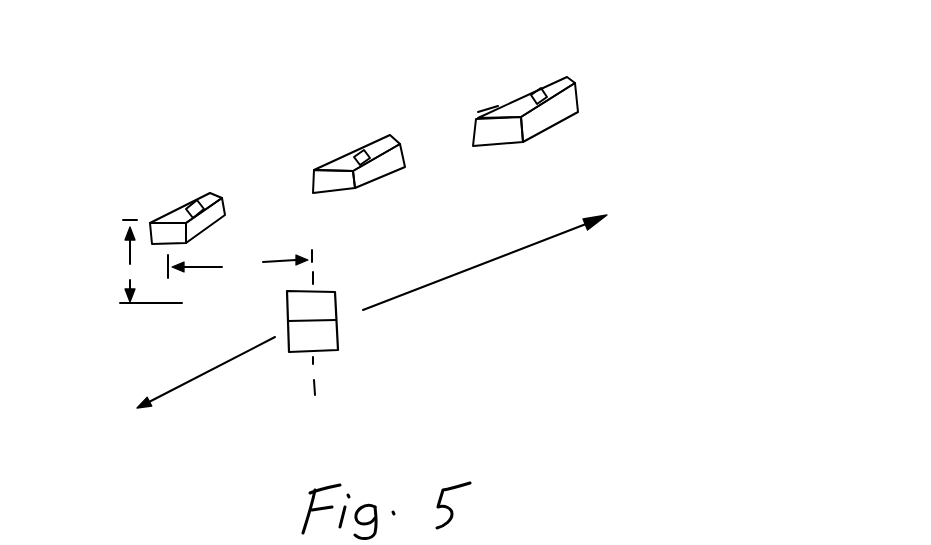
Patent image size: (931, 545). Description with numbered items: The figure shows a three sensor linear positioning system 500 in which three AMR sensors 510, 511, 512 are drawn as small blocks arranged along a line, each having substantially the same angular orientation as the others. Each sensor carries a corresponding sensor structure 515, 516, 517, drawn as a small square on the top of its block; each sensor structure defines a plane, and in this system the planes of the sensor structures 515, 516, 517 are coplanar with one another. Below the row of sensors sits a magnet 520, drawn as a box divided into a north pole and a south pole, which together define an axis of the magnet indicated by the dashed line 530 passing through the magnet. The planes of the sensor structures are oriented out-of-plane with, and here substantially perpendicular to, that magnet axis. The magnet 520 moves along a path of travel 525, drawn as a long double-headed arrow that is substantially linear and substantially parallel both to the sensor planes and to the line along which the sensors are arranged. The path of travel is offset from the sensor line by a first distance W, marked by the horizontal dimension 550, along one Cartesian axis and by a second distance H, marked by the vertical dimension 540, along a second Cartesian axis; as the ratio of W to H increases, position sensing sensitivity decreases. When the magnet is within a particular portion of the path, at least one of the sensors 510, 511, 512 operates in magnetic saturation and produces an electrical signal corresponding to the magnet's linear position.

The three sensor linear positioning system 500 is at (742, 212).
The AMR sensor 510 is at (217, 195).
The AMR sensor 511 is at (408, 142).
The AMR sensor 512 is at (582, 100).
The sensor structure 515 is at (190, 206).
The sensor structure 516 is at (363, 150).
The sensor structure 517 is at (538, 91).
The magnet 520 is at (345, 352).
The path of travel 525 is at (513, 260).
The centerline of magnet 530 is at (308, 372).
The height H dimension 540 is at (101, 269).
The width W dimension 550 is at (258, 240).